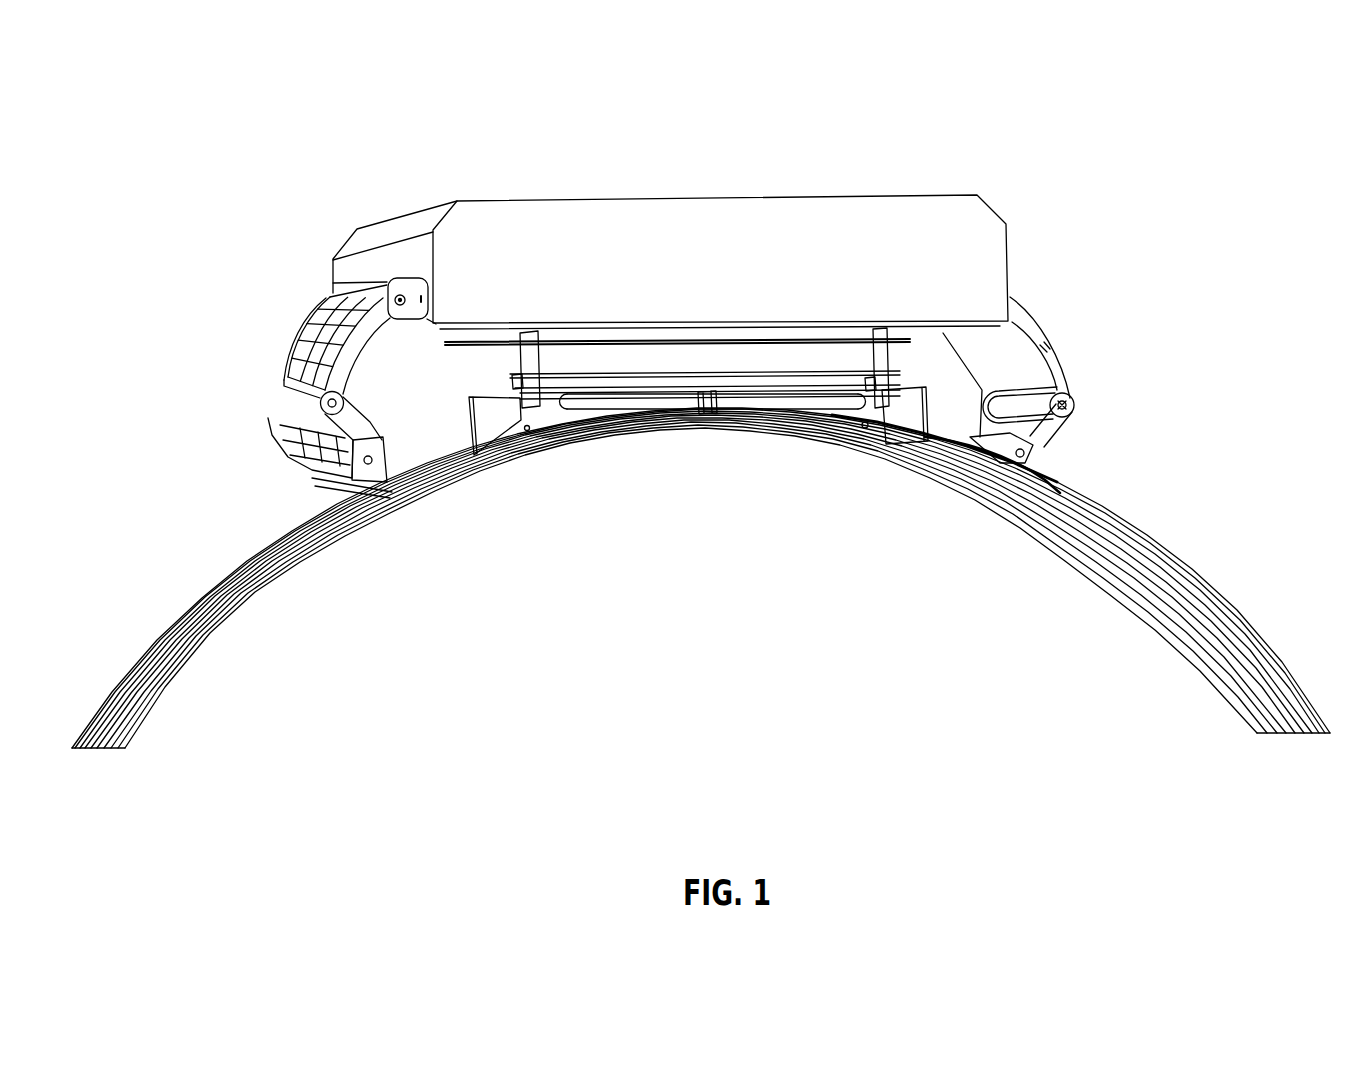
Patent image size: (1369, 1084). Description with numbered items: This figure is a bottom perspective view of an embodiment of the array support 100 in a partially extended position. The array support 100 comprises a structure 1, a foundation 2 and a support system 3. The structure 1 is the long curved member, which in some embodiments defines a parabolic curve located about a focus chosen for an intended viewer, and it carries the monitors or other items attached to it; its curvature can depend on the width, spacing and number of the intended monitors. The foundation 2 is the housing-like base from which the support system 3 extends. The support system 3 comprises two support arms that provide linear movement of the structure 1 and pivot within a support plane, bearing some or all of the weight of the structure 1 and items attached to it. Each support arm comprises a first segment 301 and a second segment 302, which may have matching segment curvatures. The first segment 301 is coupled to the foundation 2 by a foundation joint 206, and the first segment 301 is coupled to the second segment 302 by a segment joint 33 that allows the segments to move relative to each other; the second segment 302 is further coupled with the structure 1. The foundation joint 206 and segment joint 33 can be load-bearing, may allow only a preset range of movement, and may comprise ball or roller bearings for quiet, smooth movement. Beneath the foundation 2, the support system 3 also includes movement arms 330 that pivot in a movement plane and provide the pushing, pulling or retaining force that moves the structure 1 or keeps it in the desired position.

The structure 1 is at (222, 654).
The array support 100 is at (1006, 129).
The foundation 2 is at (587, 215).
The foundation joint 206 is at (398, 295).
The support system 3 is at (654, 427).
The first segment 301 is at (292, 362).
The second segment 302 is at (287, 450).
The segment joint 33 is at (344, 413).
The movement arm 330 is at (535, 357).